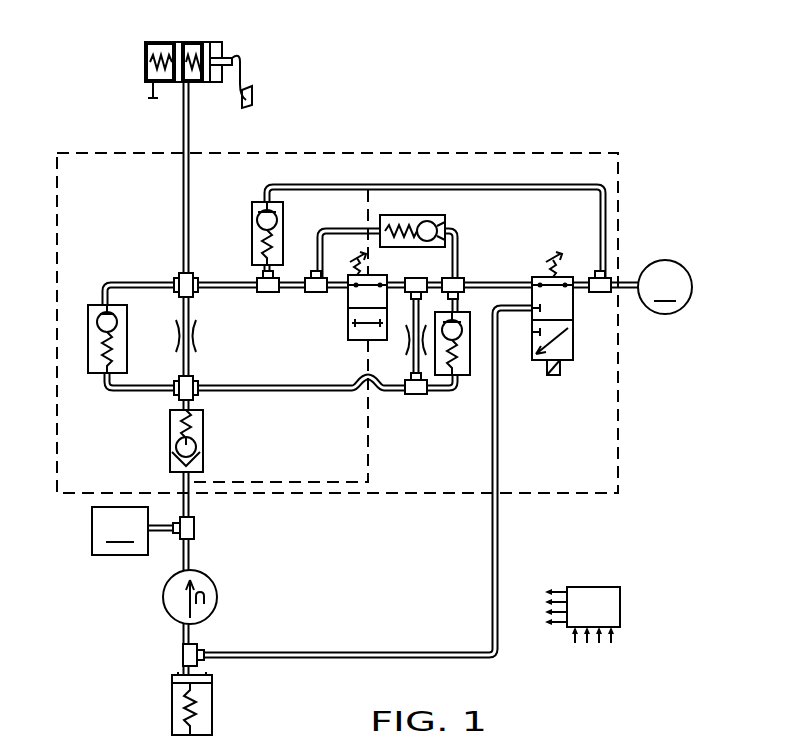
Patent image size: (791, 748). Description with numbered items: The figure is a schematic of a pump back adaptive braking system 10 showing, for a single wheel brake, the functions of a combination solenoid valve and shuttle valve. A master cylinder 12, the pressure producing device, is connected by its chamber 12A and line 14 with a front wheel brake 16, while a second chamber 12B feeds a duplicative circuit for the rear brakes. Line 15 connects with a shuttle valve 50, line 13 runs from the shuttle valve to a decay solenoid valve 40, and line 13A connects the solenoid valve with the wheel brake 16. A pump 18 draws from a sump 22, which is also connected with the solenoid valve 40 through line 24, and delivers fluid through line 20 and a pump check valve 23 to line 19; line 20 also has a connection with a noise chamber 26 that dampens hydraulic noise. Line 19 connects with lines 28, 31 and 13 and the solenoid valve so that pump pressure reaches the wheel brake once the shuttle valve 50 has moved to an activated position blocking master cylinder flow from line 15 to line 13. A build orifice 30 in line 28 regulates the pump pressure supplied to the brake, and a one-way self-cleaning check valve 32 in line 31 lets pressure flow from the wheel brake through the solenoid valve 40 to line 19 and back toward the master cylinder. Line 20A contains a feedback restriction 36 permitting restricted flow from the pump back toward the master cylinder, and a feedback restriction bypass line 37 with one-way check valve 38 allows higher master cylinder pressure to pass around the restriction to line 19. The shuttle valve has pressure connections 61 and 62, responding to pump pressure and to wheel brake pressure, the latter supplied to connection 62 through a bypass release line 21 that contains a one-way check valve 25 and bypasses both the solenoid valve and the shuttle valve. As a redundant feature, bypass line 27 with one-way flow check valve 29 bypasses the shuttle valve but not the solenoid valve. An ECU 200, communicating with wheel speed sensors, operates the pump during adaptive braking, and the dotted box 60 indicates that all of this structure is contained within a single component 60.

The adaptive braking system 10 is at (592, 109).
The master cylinder 12 is at (173, 57).
The chamber 12A is at (190, 42).
The second chamber 12B is at (145, 75).
The line 13 is at (470, 283).
The line 13A is at (625, 283).
The line 14 is at (190, 131).
The line 15 is at (223, 281).
The front wheel brake 16 is at (665, 287).
The pump 18 is at (217, 602).
The line 19 is at (262, 388).
The line 20 is at (192, 556).
The line 20A is at (180, 357).
The bypass release line 21 is at (390, 185).
The sump 22 is at (213, 702).
The pump check valve 23 is at (204, 440).
The line 24 is at (492, 582).
The one-way check valve 25 is at (252, 205).
The noise chamber 26 is at (120, 531).
The bypass line 27 is at (452, 241).
The line 28 is at (428, 380).
The one-way flow check valve 29 is at (438, 222).
The build orifice 30 is at (400, 336).
The line 31 is at (448, 392).
The one-way self-cleaning check valve 32 is at (457, 377).
The feedback restriction 36 is at (194, 338).
The feedback restriction bypass line 37 is at (138, 282).
The one-way check valve 38 is at (100, 306).
The decay solenoid valve 40 is at (578, 348).
The shuttle valve 50 is at (348, 322).
The single component 60 is at (395, 152).
The pressure connection 61 is at (368, 432).
The pressure connection 62 is at (368, 205).
The ECU 200 is at (582, 615).